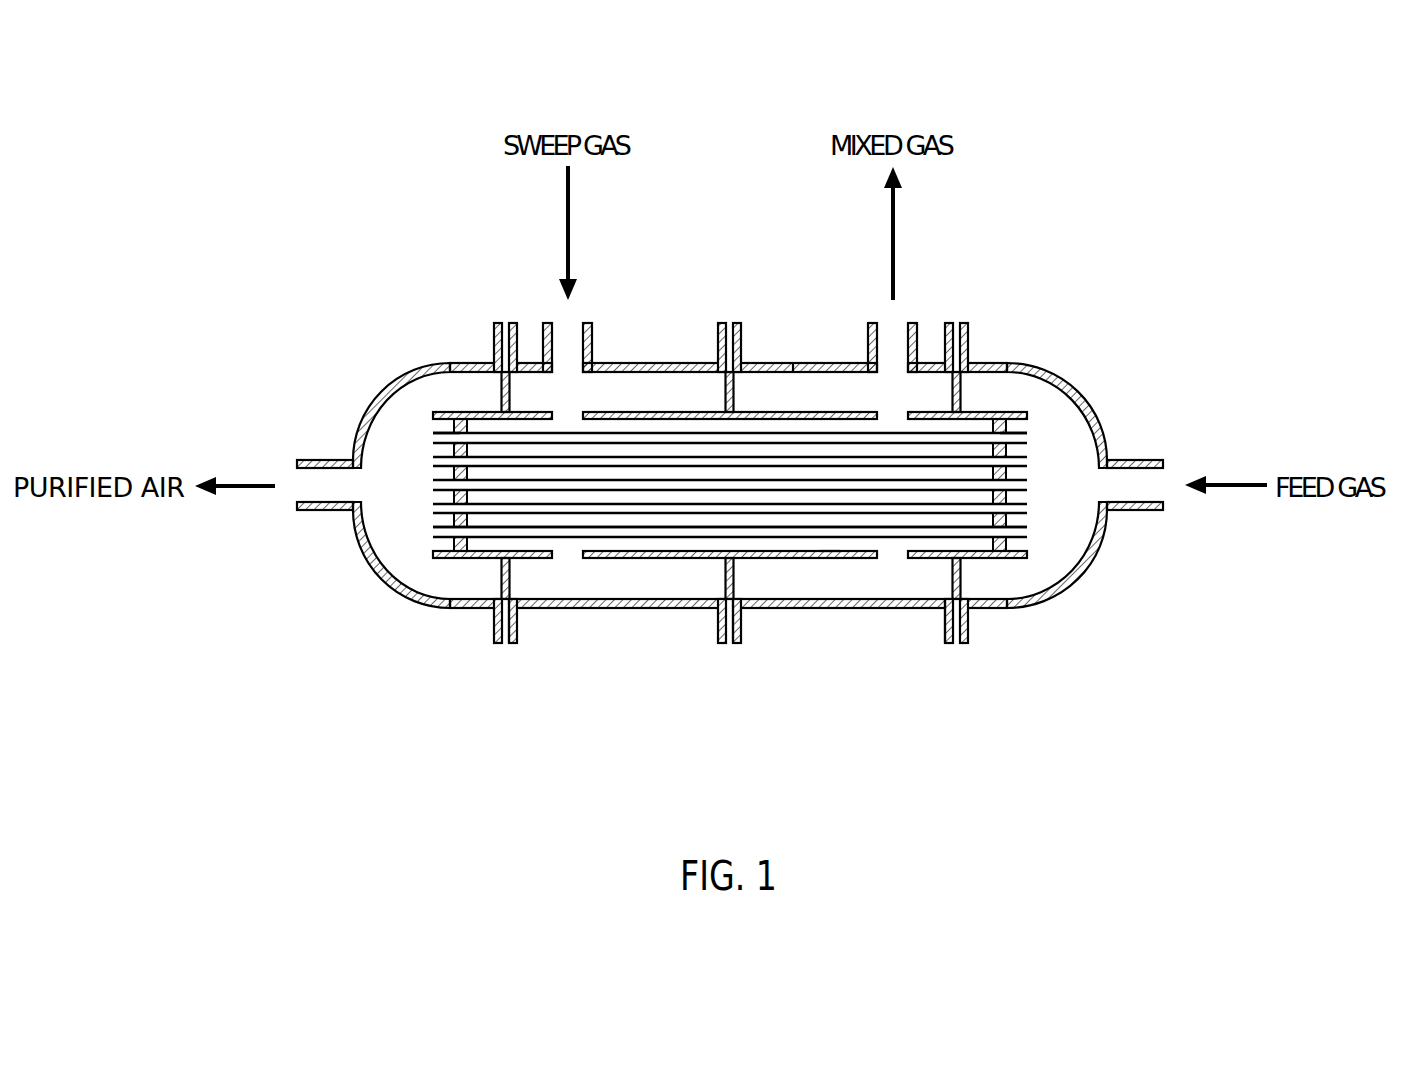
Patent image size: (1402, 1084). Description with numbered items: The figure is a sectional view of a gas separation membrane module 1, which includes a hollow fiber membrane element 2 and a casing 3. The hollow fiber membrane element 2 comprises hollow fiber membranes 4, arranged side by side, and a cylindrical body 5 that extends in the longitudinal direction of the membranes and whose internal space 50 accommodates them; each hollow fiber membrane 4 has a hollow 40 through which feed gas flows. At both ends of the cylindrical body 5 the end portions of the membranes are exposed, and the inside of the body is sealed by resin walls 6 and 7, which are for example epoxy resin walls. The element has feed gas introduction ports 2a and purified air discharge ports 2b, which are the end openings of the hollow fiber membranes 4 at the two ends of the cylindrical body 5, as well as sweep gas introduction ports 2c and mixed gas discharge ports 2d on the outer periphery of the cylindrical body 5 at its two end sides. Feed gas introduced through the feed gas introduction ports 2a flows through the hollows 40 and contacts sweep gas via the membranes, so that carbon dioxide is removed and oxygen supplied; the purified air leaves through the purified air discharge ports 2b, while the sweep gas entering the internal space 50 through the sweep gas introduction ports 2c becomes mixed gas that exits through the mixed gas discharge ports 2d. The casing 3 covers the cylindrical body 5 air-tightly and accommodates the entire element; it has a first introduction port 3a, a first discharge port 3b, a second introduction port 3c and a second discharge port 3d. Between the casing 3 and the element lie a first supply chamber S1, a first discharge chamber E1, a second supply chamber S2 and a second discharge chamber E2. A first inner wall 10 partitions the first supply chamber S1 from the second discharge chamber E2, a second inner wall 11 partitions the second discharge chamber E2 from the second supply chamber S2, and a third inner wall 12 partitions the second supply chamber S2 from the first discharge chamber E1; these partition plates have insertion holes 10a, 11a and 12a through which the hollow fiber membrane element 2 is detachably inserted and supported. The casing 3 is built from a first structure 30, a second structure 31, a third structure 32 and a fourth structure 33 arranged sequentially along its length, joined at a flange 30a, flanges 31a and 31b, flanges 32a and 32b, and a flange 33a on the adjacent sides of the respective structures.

The gas separation membrane module 1 is at (1240, 197).
The hollow fiber membrane element 2 is at (988, 366).
The feed gas introduction ports 2a is at (1027, 435).
The purified air discharge ports 2b is at (437, 438).
The sweep gas introduction ports 2c is at (596, 366).
The mixed gas discharge ports 2d is at (867, 366).
The casing 3 is at (1090, 390).
The first introduction port 3a is at (1163, 507).
The first discharge port 3b is at (297, 506).
The second introduction port 3c is at (548, 322).
The second discharge port 3d is at (877, 322).
The hollow fiber membranes 4 is at (600, 537).
The hollow 40 is at (613, 532).
The cylindrical body 5 is at (640, 557).
The resin wall 6 is at (1027, 543).
The resin wall 7 is at (448, 543).
The first inner wall 10 is at (957, 652).
The insertion hole 10a is at (950, 411).
The second inner wall 11 is at (738, 652).
The insertion hole 11a is at (736, 411).
The third inner wall 12 is at (505, 652).
The insertion hole 12a is at (501, 411).
The first structure 30 is at (1047, 368).
The flange 30a is at (965, 652).
The second structure 31 is at (792, 365).
The flange 31a is at (948, 652).
The flange 31b is at (730, 652).
The third structure 32 is at (663, 366).
The flange 32a is at (720, 652).
The flange 32b is at (513, 652).
The fourth structure 33 is at (418, 366).
The flange 33a is at (495, 652).
The internal space 50 is at (828, 543).
The first supply chamber S1 is at (1050, 562).
The second supply chamber S2 is at (673, 582).
The first discharge chamber E1 is at (420, 572).
The second discharge chamber E2 is at (895, 585).